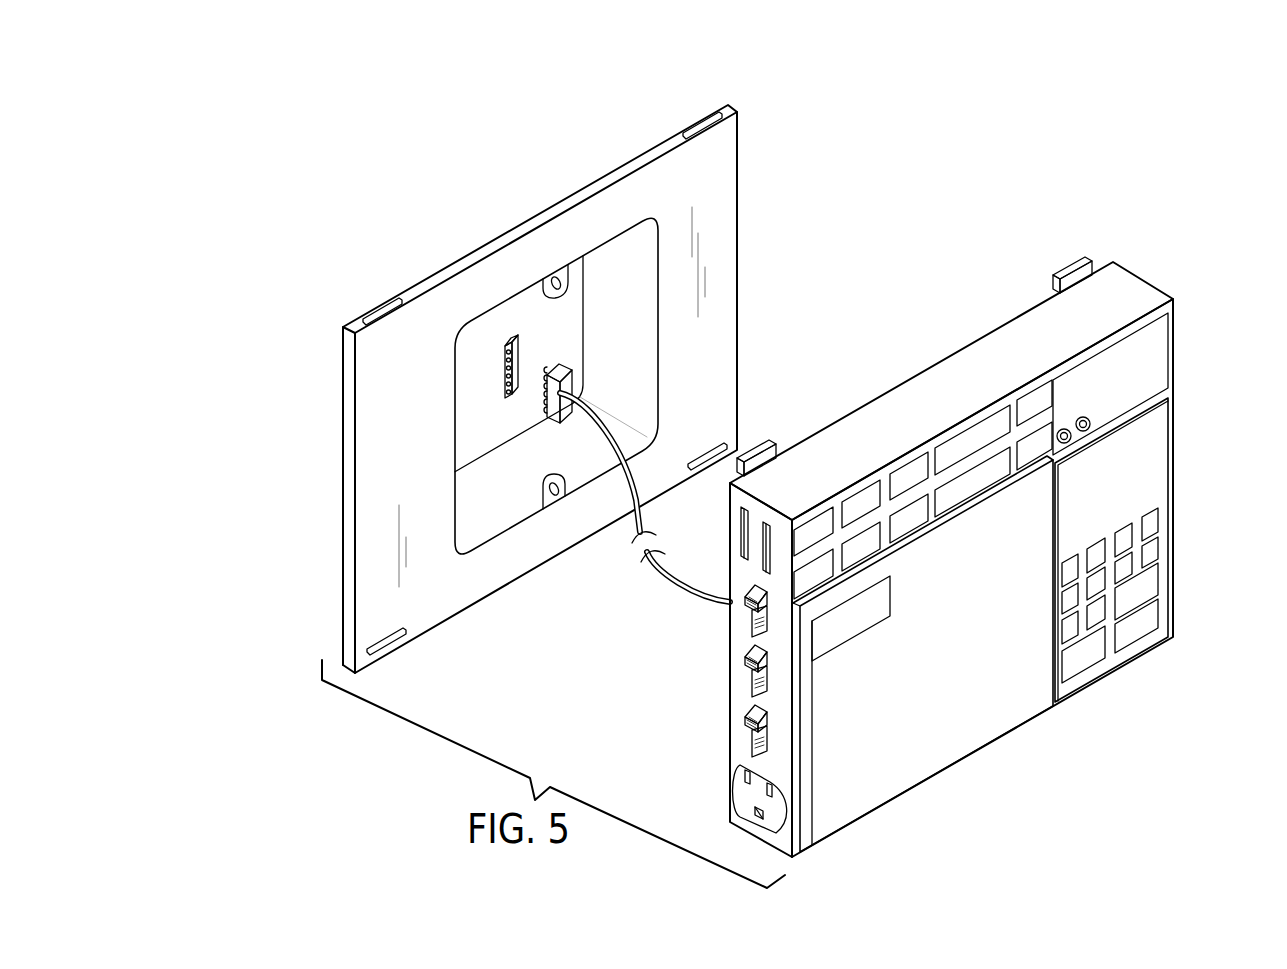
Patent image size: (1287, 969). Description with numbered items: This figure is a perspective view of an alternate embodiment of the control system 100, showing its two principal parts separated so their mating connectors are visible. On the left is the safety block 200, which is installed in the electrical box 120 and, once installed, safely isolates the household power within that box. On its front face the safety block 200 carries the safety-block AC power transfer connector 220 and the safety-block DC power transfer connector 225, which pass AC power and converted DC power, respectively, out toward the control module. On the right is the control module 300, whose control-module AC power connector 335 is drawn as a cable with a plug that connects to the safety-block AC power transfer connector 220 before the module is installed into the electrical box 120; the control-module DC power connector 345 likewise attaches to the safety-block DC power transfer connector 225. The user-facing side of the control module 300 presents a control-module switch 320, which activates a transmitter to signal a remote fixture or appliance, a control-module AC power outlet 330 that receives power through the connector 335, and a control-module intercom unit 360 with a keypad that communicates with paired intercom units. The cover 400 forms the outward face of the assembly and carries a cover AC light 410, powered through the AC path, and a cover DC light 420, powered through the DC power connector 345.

The control system 100 is at (298, 92).
The electrical box 120 is at (497, 303).
The safety block 200 is at (373, 363).
The safety-block alternating current (AC) power transfer connector 220 is at (505, 357).
The safety-block direct current (DC) power transfer connector 225 is at (507, 383).
The control module 300 is at (1120, 285).
The control-module switch 320 is at (765, 657).
The control-module alternating current (AC) power outlet 330 is at (777, 813).
The control-module alternating current (AC) power connector 335 is at (560, 417).
The control-module direct current (DC) power connector 345 is at (568, 367).
The control-module intercom unit 360 is at (1133, 487).
The cover 400 is at (993, 708).
The cover alternating current (AC) light 410 is at (972, 443).
The cover direct current (DC) light 420 is at (993, 468).